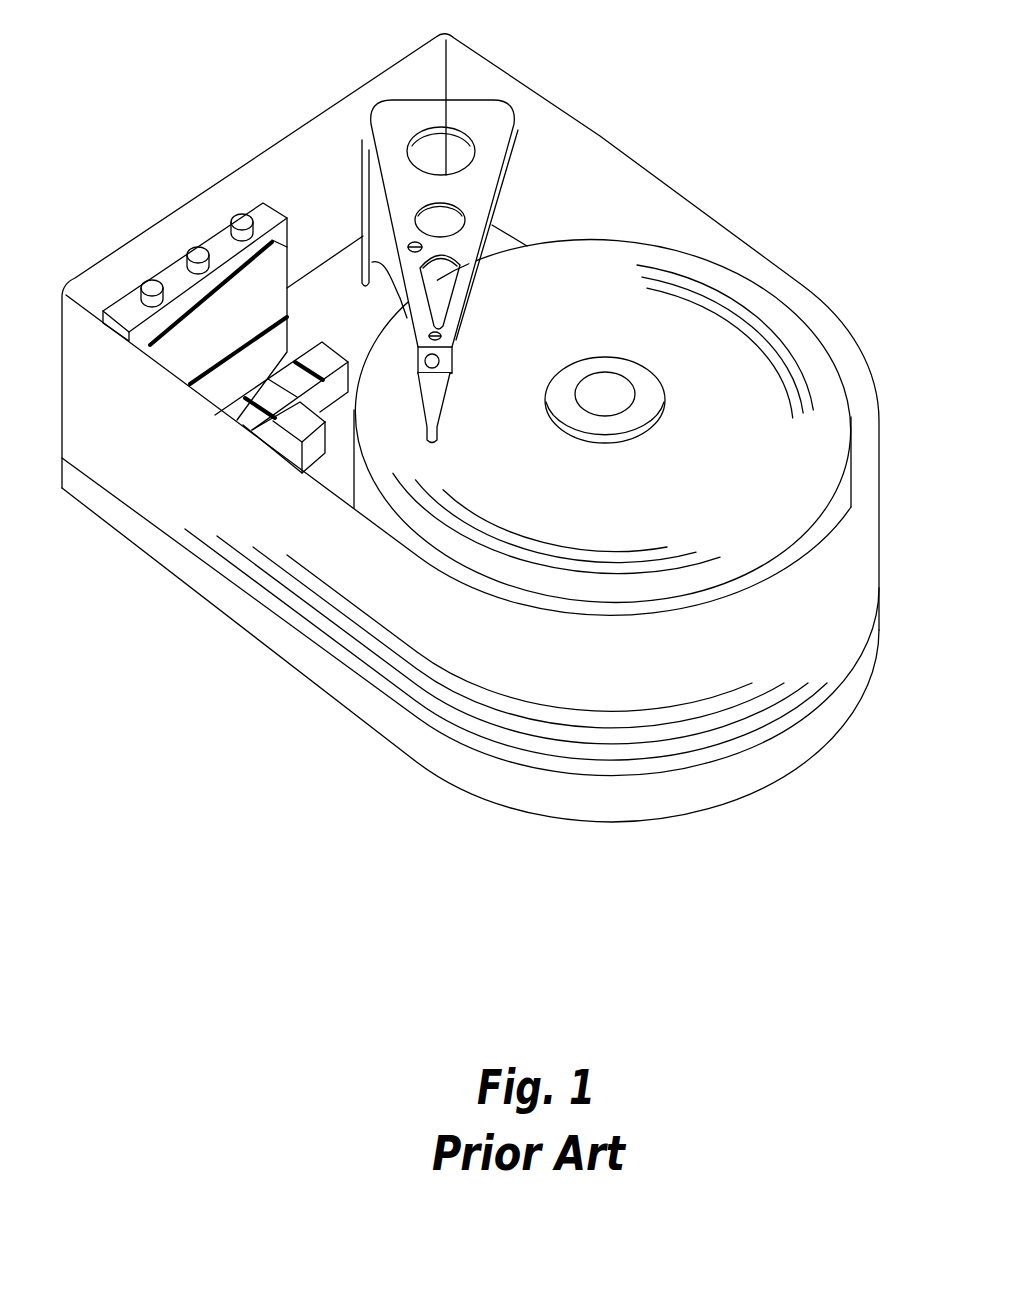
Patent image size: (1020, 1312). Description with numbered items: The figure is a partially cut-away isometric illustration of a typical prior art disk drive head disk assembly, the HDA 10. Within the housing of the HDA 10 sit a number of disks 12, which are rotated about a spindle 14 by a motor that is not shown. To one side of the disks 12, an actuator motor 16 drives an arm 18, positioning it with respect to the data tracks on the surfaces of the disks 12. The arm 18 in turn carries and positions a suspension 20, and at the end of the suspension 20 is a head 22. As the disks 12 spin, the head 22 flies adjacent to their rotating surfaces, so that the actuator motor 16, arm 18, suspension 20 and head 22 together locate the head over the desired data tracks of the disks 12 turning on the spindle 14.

The disk drive HDA 10 is at (860, 899).
The disks 12 is at (746, 489).
The spindle 14 is at (603, 345).
The actuator motor 16 is at (410, 88).
The arm 18 is at (474, 228).
The suspension 20 is at (410, 350).
The head 22 is at (450, 423).